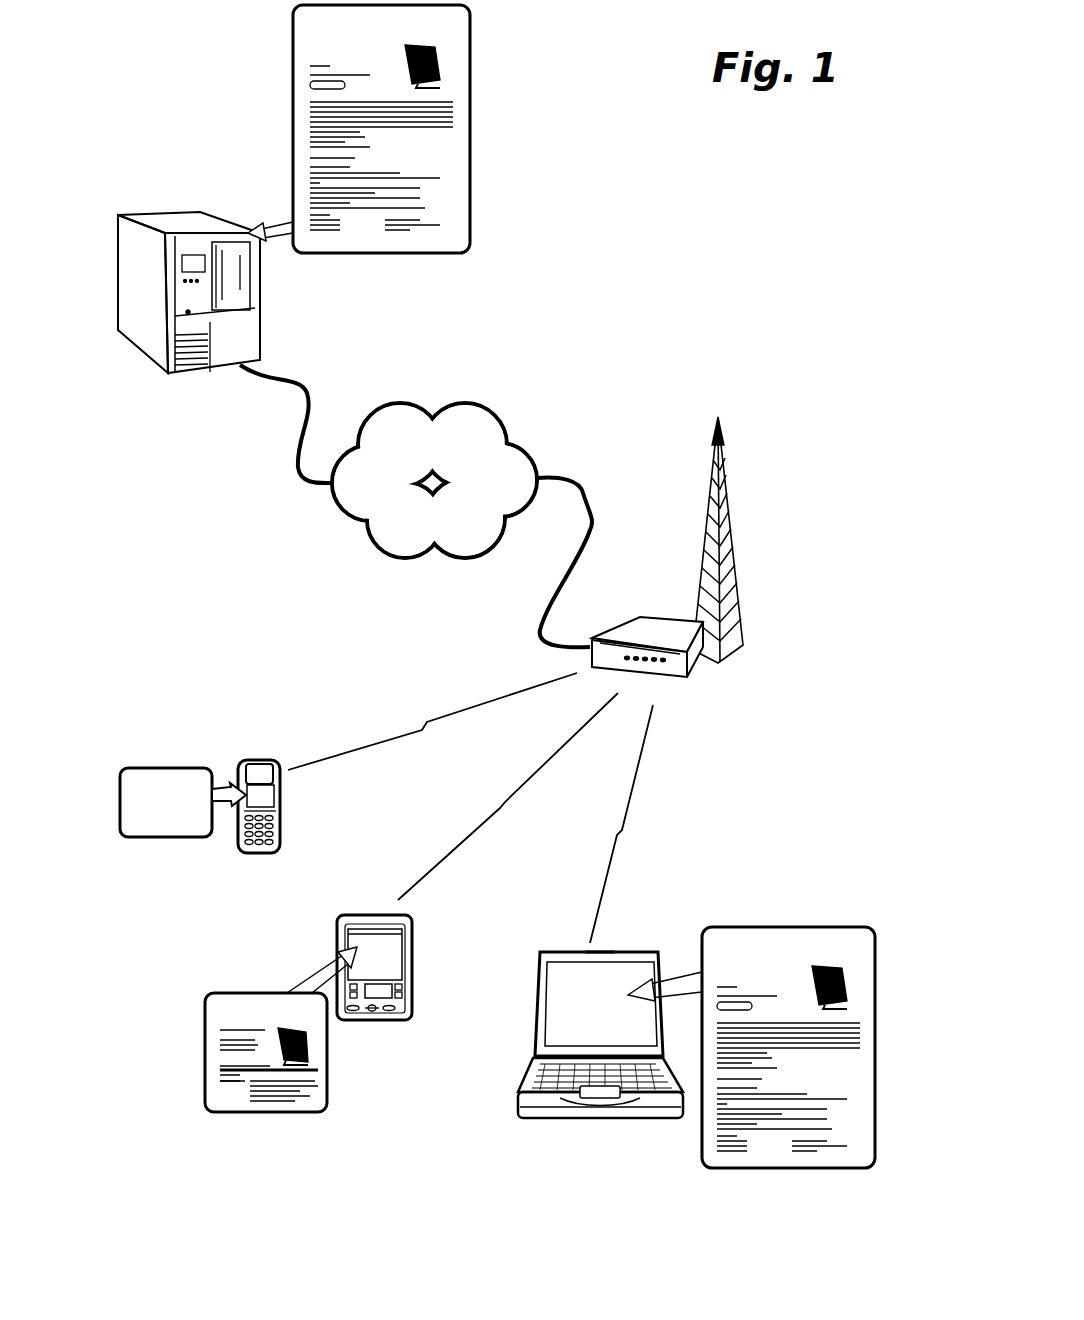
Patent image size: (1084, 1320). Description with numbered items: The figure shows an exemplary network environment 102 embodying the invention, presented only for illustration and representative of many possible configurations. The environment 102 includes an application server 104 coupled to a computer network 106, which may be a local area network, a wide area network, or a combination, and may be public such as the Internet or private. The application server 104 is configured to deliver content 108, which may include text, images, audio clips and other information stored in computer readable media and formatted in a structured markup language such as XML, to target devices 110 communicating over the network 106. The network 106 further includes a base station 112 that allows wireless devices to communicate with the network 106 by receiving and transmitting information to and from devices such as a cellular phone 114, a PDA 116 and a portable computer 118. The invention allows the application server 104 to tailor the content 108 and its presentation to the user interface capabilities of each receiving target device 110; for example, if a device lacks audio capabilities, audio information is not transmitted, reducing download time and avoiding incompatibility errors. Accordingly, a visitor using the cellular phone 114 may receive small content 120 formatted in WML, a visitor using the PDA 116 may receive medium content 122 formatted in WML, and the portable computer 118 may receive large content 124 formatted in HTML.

The environment 102 is at (642, 248).
The application server 104 is at (118, 262).
The computer network 106 is at (393, 557).
The content 108 is at (293, 66).
The target devices 110 is at (145, 1152).
The base station 112 is at (742, 608).
The cellular phone 114 is at (280, 805).
The PDA 116 is at (412, 950).
The portable computer 118 is at (537, 1018).
The small content 120 is at (120, 795).
The medium content 122 is at (205, 1043).
The large content 124 is at (875, 1093).